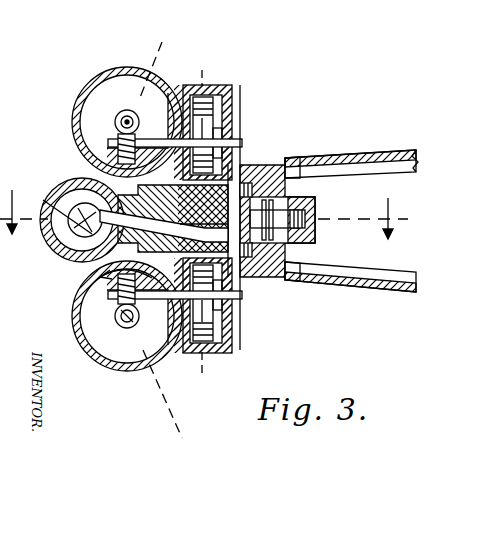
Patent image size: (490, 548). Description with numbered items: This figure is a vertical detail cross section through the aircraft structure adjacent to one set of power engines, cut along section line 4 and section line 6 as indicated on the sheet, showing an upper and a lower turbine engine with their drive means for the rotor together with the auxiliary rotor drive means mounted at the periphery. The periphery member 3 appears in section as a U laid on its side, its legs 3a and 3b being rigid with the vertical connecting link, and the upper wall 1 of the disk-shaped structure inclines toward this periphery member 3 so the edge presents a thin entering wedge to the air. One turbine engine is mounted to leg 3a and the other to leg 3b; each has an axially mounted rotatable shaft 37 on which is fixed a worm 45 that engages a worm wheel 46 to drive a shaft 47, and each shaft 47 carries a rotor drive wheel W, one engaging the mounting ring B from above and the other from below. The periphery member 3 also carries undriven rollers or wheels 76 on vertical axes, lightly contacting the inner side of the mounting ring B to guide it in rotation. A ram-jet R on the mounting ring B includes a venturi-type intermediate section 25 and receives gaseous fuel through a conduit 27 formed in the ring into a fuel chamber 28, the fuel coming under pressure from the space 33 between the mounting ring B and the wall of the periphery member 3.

The upper wall 1 is at (204, 208).
The periphery member 3 is at (285, 160).
The upper leg of the U 3a is at (283, 160).
The lower leg of the U 3b is at (247, 276).
The section line 4- 4 is at (176, 37).
The section line 6- 6 is at (216, 64).
The intermediate section 25 is at (74, 182).
The conduit 27 is at (242, 163).
The fuel chamber 28 is at (60, 250).
The space 33 is at (285, 262).
The shaft 37 is at (120, 118).
The worm 45 is at (129, 110).
The worm wheel 46 is at (150, 132).
The shaft 47 is at (228, 145).
The rollers or wheels 76 is at (300, 197).
The mounting ring B is at (135, 247).
The ram-jet R is at (58, 104).
The rotor drive wheel W is at (222, 110).